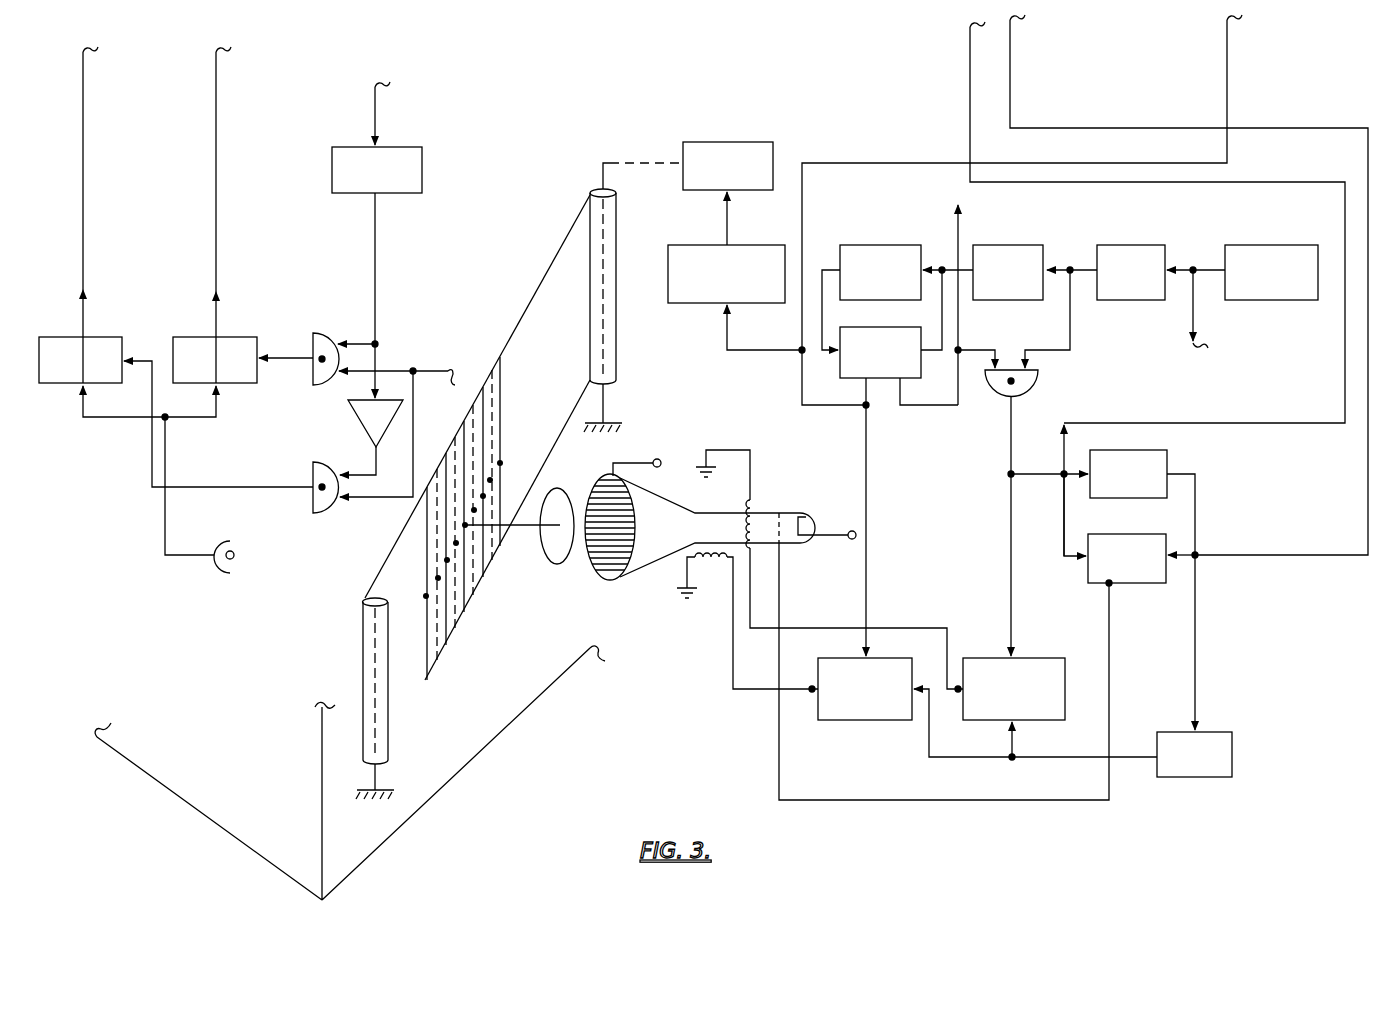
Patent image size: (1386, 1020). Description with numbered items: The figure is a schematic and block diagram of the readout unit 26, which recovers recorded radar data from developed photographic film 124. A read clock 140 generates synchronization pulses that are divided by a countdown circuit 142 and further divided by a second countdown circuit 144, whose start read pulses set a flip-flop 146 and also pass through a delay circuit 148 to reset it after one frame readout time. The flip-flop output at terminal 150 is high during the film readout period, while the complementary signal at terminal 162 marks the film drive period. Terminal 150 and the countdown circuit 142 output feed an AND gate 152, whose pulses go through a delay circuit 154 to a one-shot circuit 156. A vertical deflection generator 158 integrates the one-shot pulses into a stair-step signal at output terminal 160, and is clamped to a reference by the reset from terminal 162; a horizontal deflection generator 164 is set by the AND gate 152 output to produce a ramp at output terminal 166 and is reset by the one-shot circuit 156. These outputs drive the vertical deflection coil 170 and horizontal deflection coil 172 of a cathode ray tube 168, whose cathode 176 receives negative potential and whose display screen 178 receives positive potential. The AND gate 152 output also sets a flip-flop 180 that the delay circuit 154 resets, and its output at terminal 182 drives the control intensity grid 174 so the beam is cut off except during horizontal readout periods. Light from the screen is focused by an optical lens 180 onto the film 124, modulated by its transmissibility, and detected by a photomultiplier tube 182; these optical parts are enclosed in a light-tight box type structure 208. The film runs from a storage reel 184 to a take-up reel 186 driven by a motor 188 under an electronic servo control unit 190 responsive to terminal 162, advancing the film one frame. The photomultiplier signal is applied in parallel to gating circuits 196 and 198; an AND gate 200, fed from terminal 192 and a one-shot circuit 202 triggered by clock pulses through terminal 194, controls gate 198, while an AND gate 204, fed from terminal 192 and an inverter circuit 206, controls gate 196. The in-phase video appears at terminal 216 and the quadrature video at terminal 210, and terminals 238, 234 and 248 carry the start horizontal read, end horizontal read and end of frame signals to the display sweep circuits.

The readout unit 26 is at (143, 504).
The photographic film 124 is at (468, 612).
The read clock 140 is at (1297, 245).
The countdown circuit 142 is at (1147, 245).
The countdown circuit 144 is at (1022, 245).
The flip-flop 146 is at (908, 318).
The delay circuit 148 is at (892, 245).
The output terminal of flip-flop 150 is at (906, 394).
The AND gate 152 is at (996, 400).
The delay circuit 154 is at (1122, 450).
The one-shot circuit 156 is at (1222, 777).
The vertical deflection generator 158 is at (895, 713).
The output terminal of vertical deflection generator 160 is at (810, 693).
The output terminal of flip-flop 162 is at (862, 388).
The horizontal deflection generator 164 is at (972, 658).
The output terminal of horizontal deflection generator 166 is at (964, 690).
The cathode ray tube 168 is at (660, 567).
The vertical deflection coil 170 is at (720, 582).
The horizontal deflection coil 172 is at (754, 500).
The control intensity grid 174 is at (792, 535).
The cathode 176 is at (814, 527).
The display screen 178 is at (600, 579).
The optical lens 180 is at (566, 492).
The photomultiplier tube 182 is at (224, 539).
The storage reel 184 is at (366, 641).
The take-up reel 186 is at (591, 190).
The motor 188 is at (750, 142).
The electronic servo control unit 190 is at (761, 245).
The terminal 192 is at (452, 372).
The terminal 194 is at (378, 98).
The gating circuit 196 is at (108, 338).
The gating circuit 198 is at (243, 338).
The AND gate 200 is at (322, 334).
The one-shot circuit 202 is at (422, 181).
The AND gate 204 is at (332, 517).
The inverter circuit 206 is at (348, 414).
The box type structure 208 is at (355, 875).
The terminal 210 is at (216, 200).
The terminal 216 is at (83, 126).
The terminal 234 is at (1012, 42).
The terminal 238 is at (968, 44).
The terminal 248 is at (1230, 46).